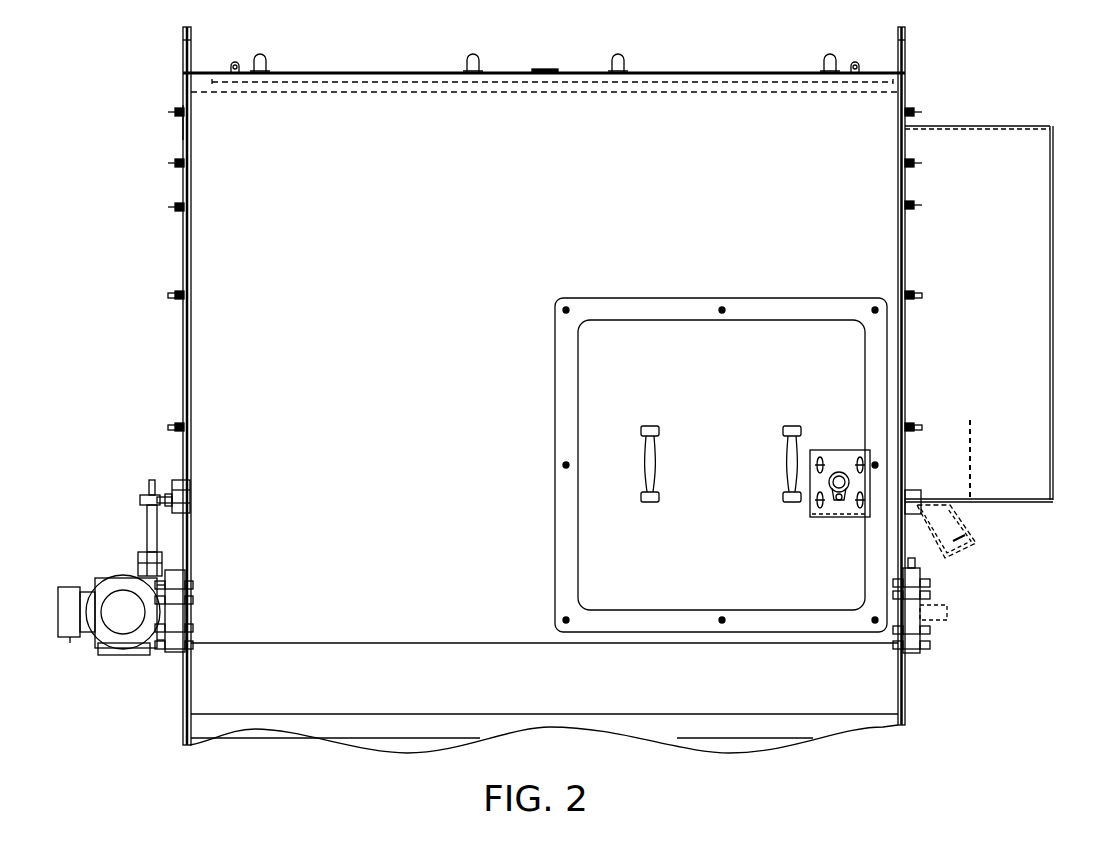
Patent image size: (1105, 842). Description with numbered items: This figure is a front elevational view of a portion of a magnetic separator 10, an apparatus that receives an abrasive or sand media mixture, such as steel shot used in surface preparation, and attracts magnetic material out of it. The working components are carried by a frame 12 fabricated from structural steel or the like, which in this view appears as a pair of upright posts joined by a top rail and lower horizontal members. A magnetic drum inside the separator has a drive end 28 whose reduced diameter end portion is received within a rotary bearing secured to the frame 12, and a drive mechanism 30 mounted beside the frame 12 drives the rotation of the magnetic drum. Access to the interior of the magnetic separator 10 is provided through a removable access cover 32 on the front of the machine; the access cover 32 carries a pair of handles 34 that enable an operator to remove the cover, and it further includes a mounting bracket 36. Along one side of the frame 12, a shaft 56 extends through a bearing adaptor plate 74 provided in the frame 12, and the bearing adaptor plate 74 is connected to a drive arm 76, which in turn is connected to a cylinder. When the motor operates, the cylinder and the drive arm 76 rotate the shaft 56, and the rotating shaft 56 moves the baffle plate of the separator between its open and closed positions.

The magnetic separator 10 is at (985, 67).
The frame 12 is at (184, 108).
The drive end 28 is at (912, 652).
The drive mechanism 30 is at (118, 638).
The access cover 32 is at (690, 590).
The handles 34 is at (647, 448).
The mounting bracket 36 is at (843, 508).
The shaft 56 is at (148, 495).
The bearing adaptor plate 74 is at (178, 490).
The drive arm 76 is at (148, 530).